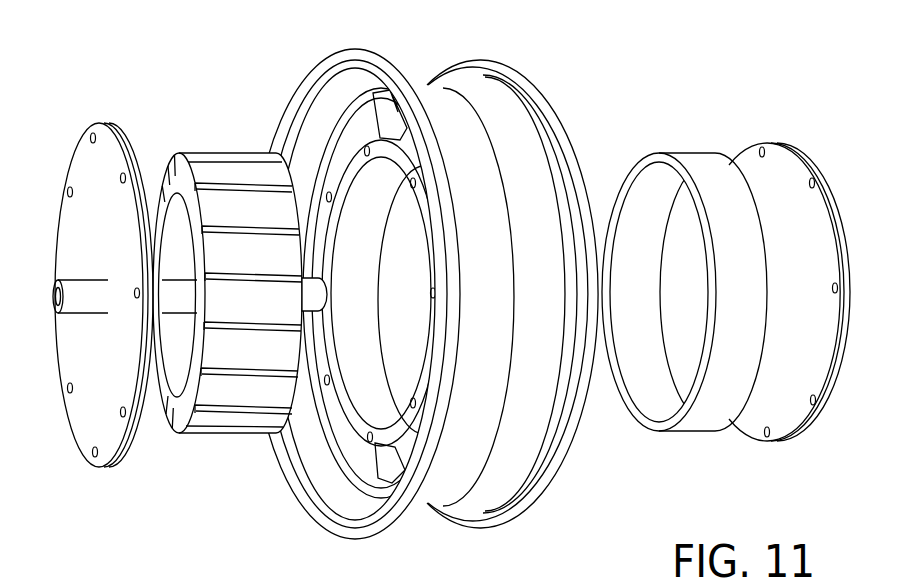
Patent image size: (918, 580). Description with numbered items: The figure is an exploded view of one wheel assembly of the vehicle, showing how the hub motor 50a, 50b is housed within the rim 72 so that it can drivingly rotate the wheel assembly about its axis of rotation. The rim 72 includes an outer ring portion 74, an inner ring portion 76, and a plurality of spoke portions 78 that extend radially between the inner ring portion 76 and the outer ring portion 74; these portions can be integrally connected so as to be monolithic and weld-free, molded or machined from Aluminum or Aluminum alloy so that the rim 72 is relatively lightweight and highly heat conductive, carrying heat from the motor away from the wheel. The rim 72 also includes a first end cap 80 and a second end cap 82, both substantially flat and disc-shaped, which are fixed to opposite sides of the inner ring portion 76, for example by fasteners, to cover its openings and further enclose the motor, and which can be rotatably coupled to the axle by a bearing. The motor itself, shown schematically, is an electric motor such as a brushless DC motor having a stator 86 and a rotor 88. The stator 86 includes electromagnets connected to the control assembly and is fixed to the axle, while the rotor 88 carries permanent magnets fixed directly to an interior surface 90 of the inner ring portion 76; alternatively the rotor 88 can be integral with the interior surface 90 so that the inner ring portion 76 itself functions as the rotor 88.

The motor assembly 50a is at (432, 308).
The motor assembly 50b is at (93, 108).
The rim 72 is at (556, 479).
The outer ring portion 74 is at (405, 308).
The inner ring portion 76 is at (362, 440).
The spoke portions 78 is at (360, 457).
The first end cap 80 is at (87, 415).
The second end cap 82 is at (813, 413).
The stator 86 is at (177, 407).
The rotor 88 is at (702, 420).
The interior surface 90 is at (373, 403).